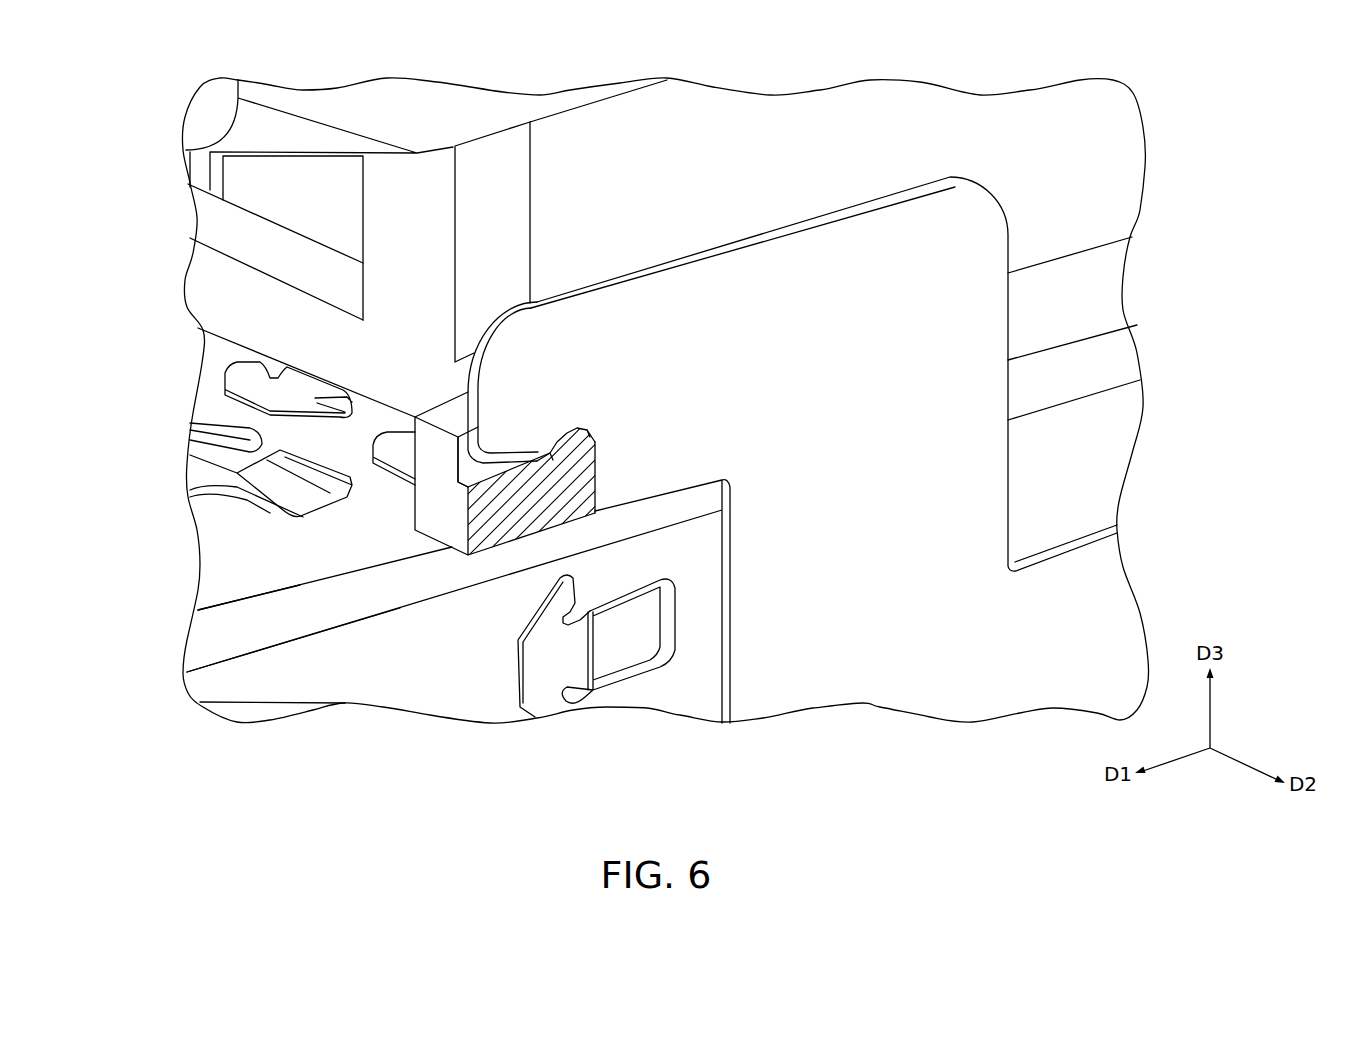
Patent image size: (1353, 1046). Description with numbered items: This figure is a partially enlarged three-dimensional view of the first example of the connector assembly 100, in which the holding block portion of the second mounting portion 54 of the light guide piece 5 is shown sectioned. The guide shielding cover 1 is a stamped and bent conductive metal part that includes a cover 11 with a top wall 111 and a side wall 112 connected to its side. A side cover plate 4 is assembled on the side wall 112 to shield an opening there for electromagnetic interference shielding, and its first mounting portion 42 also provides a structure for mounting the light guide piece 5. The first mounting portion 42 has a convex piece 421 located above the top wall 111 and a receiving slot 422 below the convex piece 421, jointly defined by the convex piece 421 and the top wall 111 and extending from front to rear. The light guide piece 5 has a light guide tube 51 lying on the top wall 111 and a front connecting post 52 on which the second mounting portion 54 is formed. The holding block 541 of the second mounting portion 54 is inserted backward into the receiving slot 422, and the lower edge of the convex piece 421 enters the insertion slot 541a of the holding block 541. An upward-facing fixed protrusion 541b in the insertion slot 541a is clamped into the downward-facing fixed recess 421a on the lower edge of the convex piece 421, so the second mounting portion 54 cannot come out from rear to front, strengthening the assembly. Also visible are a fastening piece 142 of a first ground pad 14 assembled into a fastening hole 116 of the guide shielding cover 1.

The connector assembly 100 is at (1207, 84).
The light guide piece 5 is at (403, 226).
The light guide tube 51 is at (543, 108).
The front connecting post 52 is at (212, 283).
The side cover plate 4 is at (804, 374).
The first mounting portion 42 is at (792, 374).
The convex piece 421 is at (513, 387).
The fixed recess 421a is at (575, 427).
The receiving slot 422 is at (600, 440).
The second mounting portion 54 is at (534, 477).
The holding block 541 is at (534, 477).
The insertion slot 541a is at (468, 468).
The fixed protrusion 541b is at (572, 450).
The guide shielding cover 1 is at (406, 562).
The cover 11 is at (406, 562).
The top wall 111 is at (230, 563).
The side wall 112 is at (425, 693).
The first ground pad 14 is at (589, 671).
The fastening piece 142 is at (589, 671).
The fastening hole 116 is at (632, 677).